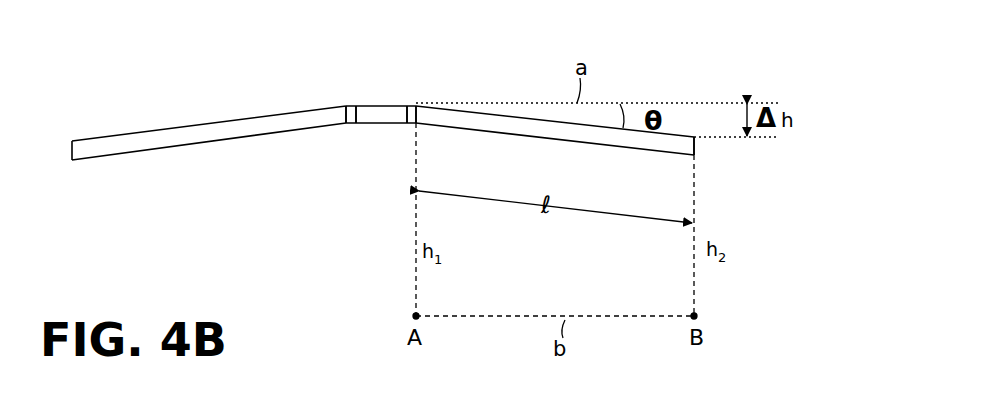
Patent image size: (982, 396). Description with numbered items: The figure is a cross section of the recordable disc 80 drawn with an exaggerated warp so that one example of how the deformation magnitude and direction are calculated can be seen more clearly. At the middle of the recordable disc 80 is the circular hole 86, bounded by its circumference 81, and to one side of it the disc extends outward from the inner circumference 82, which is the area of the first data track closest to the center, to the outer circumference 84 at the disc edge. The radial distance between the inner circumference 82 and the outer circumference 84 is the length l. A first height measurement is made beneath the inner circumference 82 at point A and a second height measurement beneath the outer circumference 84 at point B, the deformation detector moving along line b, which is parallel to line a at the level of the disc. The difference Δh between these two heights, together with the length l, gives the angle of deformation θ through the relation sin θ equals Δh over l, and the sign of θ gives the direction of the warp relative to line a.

The recordable disc 80 is at (316, 88).
The circumference of circular hole 81 is at (408, 106).
The inner circumference 82 is at (416, 106).
The outer circumference 84 is at (694, 137).
The circular hole 86 is at (365, 106).